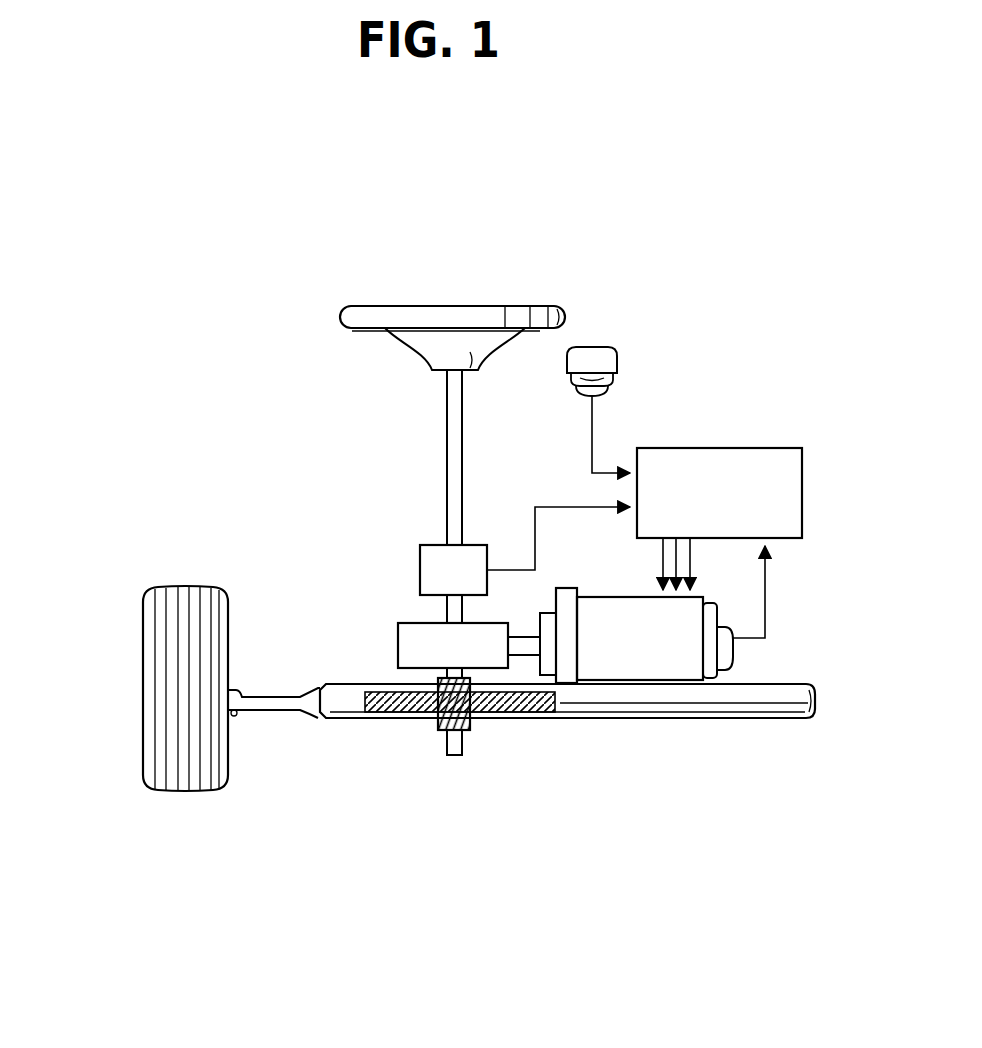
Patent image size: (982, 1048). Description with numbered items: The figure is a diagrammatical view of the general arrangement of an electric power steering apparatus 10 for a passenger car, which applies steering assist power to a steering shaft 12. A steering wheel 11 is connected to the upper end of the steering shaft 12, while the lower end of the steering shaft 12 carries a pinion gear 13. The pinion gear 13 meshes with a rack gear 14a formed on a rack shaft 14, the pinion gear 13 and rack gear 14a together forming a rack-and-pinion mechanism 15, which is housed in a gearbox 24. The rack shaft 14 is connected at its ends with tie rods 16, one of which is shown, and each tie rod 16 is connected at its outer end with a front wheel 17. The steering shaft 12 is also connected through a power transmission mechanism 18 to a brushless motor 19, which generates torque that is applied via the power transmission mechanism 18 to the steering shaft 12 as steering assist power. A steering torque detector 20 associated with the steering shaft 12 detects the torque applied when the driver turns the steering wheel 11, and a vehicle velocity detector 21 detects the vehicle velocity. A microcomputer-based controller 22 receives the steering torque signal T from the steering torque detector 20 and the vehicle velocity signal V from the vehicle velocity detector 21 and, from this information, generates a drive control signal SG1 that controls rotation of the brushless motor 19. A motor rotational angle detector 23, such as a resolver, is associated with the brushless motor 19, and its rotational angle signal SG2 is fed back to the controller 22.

The electric power steering apparatus 10 is at (437, 247).
The steering wheel 11 is at (480, 305).
The steering shaft 12 is at (445, 440).
The pinion gear 13 is at (470, 735).
The rack shaft 14 is at (785, 690).
The rack gear 14a is at (390, 713).
The rack-and-pinion mechanism 15 is at (426, 745).
The tie rod 16 is at (290, 712).
The front wheel 17 is at (143, 625).
The power transmission mechanism 18 is at (398, 637).
The brushless motor 19 is at (670, 652).
The steering torque detector 20 is at (420, 570).
The vehicle velocity detector 21 is at (617, 352).
The controller 22 is at (735, 448).
The motor rotational angle detector 23 is at (728, 650).
The gearbox 24 is at (517, 727).
The vehicle velocity signal V is at (593, 438).
The steering torque signal T is at (558, 538).
The drive control signal SG1 is at (655, 560).
The rotational angle signal SG2 is at (767, 598).